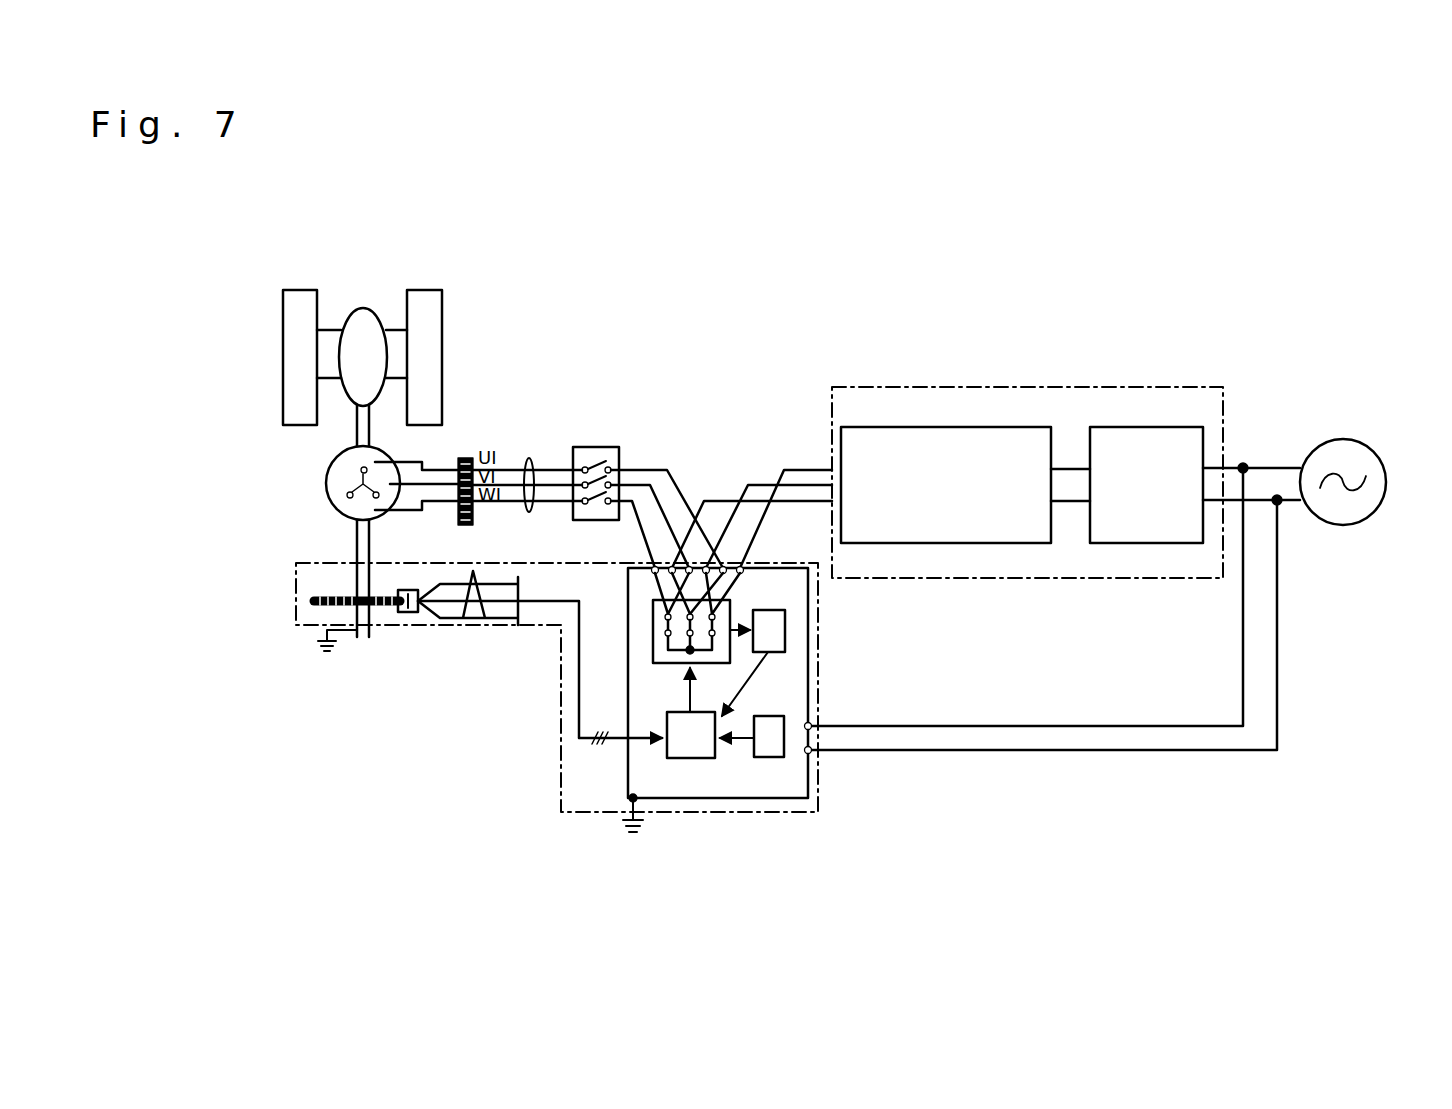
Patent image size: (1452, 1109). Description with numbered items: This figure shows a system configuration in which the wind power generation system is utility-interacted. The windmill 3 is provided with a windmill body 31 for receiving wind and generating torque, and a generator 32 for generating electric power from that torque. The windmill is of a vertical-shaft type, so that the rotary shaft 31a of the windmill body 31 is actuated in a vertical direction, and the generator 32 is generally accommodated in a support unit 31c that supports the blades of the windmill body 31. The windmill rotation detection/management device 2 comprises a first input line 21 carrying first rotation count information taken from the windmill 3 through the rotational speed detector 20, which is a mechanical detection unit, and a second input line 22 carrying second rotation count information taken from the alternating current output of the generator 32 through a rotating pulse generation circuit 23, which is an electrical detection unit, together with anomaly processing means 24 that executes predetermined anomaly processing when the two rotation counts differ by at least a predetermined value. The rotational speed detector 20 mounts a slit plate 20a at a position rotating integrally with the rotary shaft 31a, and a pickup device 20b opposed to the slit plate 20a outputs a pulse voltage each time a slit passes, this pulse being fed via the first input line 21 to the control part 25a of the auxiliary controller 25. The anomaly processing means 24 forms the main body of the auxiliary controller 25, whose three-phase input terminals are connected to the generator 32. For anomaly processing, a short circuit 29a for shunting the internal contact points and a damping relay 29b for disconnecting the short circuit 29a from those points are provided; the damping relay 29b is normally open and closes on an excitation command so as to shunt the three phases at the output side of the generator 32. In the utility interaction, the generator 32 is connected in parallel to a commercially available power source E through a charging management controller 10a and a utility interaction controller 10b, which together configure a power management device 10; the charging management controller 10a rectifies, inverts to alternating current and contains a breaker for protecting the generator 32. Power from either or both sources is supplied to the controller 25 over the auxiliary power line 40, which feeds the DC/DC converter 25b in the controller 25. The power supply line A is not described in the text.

The windmill 3 is at (477, 285).
The windmill body 31 is at (413, 279).
The rotary shaft 31a is at (352, 432).
The support unit 31c is at (372, 344).
The generator 32 is at (338, 505).
The power supply line A is at (682, 452).
The power management device 10 is at (1118, 385).
The charging management controller 10a is at (935, 427).
The utility interaction controller 10b is at (1157, 427).
The commercially available power source E is at (1341, 440).
The auxiliary power line 40 is at (1190, 758).
The windmill rotation detection/management device 2 is at (560, 768).
The rotational speed detector 20 is at (386, 622).
The slit plate 20a is at (316, 606).
The pickup device 20b is at (414, 612).
The first input line 21 is at (613, 752).
The second input line 22 is at (770, 655).
The rotating pulse generation circuit 23 is at (786, 618).
The anomaly processing means 24 is at (754, 778).
The auxiliary controller 25 is at (810, 630).
The control part 25a is at (696, 760).
The DC/DC converter 25b is at (779, 758).
The short circuit 29a is at (727, 640).
The damping relay 29b is at (653, 620).